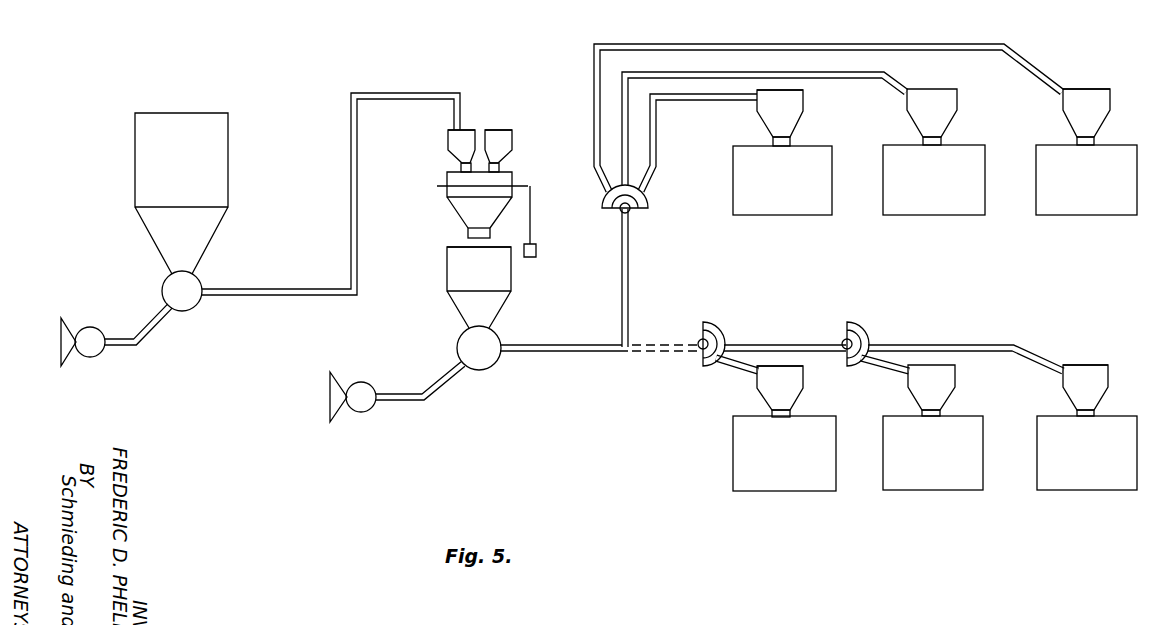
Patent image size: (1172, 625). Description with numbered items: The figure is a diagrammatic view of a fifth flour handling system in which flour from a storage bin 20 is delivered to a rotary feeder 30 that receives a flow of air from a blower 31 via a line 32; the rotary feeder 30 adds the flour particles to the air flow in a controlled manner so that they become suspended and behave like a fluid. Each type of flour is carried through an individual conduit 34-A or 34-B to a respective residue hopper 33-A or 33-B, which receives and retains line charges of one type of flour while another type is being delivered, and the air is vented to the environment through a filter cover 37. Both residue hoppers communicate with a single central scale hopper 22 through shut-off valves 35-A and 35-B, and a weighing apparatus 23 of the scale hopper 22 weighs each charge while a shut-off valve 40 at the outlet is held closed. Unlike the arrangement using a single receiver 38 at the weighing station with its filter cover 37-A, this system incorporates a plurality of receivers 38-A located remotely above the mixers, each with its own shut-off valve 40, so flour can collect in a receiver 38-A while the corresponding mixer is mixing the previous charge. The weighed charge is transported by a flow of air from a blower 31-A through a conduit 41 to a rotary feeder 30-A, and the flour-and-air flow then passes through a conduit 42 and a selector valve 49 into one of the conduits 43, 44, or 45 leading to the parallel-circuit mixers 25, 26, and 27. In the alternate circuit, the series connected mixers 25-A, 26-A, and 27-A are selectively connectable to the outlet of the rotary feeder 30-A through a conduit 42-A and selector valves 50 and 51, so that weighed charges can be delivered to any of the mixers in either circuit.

The storage bin 20 is at (206, 115).
The scale hopper 22 is at (446, 210).
The weighing apparatus 23 is at (531, 242).
The mixer 25 is at (770, 208).
The mixer 26 is at (924, 208).
The mixer 27 is at (1072, 208).
The series connected mixer 25-A is at (767, 482).
The series connected mixer 26-A is at (908, 480).
The series connected mixer 27-A is at (1064, 482).
The rotary feeder 30 is at (188, 296).
The rotary feeder 30-A is at (478, 362).
The blower 31 is at (93, 348).
The blower 31-A is at (362, 392).
The line 32 is at (148, 336).
The residue hopper 33-A is at (450, 148).
The residue hopper 33-B is at (499, 158).
The conduit 34-A is at (352, 226).
The conduit 34-B is at (530, 45).
The shut-off valve 35-A is at (461, 168).
The shut-off valve 35-B is at (499, 168).
The filter cover 37 is at (463, 128).
The filter cover 37-A is at (452, 248).
The receiver 38 is at (504, 280).
The receiver 38-A is at (790, 120).
The shut-off valve 40 is at (470, 236).
The conduit 41 is at (407, 400).
The conduit 42 is at (583, 352).
The conduit 42-A is at (655, 352).
The conduit 43 is at (724, 46).
The conduit 44 is at (825, 77).
The conduit 45 is at (686, 100).
The selector valve 49 is at (632, 213).
The selector valve 50 is at (712, 326).
The selector valve 51 is at (856, 326).